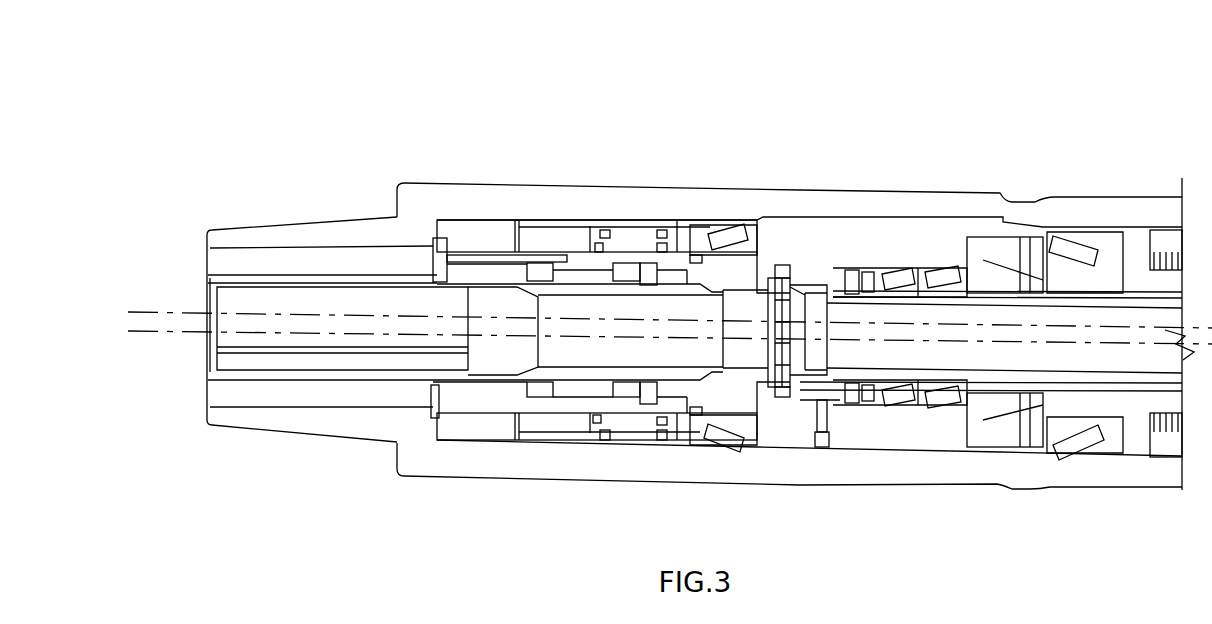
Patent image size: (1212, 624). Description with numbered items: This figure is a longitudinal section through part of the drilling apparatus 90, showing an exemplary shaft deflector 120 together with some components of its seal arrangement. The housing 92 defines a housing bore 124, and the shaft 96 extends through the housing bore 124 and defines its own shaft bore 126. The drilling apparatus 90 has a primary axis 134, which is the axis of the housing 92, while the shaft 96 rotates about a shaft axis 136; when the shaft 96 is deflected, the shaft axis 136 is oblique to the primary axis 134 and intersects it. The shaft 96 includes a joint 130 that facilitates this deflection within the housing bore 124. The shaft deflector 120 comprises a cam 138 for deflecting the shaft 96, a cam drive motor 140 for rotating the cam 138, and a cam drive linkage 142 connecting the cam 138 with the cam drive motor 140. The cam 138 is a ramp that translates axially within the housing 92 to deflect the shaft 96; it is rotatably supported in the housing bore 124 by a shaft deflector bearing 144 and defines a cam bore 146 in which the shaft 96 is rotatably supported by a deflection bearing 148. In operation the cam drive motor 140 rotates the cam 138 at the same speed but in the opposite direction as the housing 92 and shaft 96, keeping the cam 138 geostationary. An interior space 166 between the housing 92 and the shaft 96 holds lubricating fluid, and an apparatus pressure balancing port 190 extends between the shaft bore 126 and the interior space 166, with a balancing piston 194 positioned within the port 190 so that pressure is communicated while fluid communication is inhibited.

The drilling apparatus 90 is at (208, 112).
The shaft deflector 120 is at (834, 74).
The housing 92 is at (1147, 212).
The cam drive motor 140 is at (288, 398).
The primary axis 134 is at (170, 310).
The shaft axis 136 is at (175, 333).
The cam drive linkage 142 is at (345, 300).
The apparatus pressure balancing port 190 is at (440, 245).
The balancing piston 194 is at (628, 240).
The interior space 166 is at (927, 227).
The shaft deflector bearing 144 is at (717, 445).
The cam bore 146 is at (817, 420).
The joint 130 is at (797, 315).
The shaft 96 is at (1010, 307).
The cam 138 is at (865, 248).
The deflection bearing 148 is at (900, 393).
The shaft bore 126 is at (1013, 352).
The housing bore 124 is at (1133, 397).